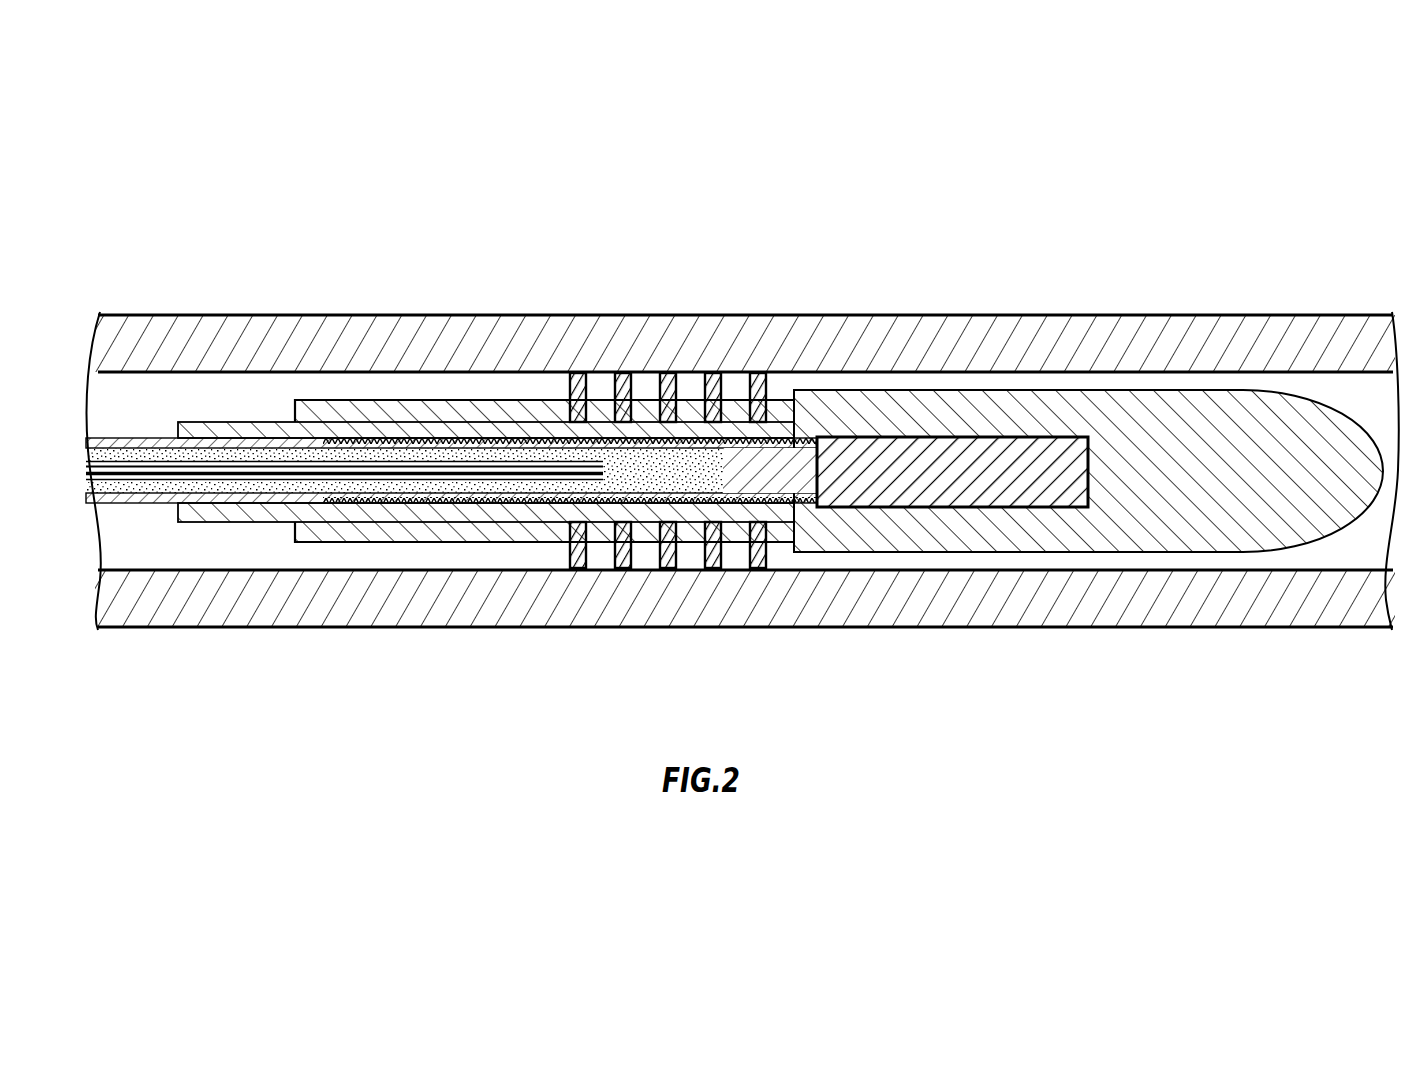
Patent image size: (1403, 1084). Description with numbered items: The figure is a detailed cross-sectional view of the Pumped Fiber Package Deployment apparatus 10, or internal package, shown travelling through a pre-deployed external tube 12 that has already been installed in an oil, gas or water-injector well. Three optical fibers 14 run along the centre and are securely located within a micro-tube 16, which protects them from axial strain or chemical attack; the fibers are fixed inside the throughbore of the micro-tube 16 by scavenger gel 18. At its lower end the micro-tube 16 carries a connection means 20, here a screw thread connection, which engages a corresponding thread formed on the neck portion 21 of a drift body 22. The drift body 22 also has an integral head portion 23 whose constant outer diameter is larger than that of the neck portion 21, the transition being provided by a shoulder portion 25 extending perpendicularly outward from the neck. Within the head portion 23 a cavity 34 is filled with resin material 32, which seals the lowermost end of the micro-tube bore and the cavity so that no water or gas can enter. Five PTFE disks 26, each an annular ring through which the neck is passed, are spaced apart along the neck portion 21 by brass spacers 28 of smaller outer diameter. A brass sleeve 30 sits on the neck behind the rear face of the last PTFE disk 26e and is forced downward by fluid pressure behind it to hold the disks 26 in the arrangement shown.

The Pumped Fiber Package Deployment apparatus 10 is at (780, 467).
The external tube 12 is at (1025, 628).
The optical fibers 14 is at (227, 489).
The micro-tube 16 is at (134, 434).
The scavenger gel 18 is at (688, 474).
The connection means 20 is at (472, 505).
The neck portion 21 is at (522, 510).
The drift body 22 is at (1165, 389).
The head portion 23 is at (1141, 411).
The shoulder portion 25 is at (797, 540).
The disk 26 is at (708, 372).
The last PTFE disk 26e is at (578, 376).
The spacer 28 is at (733, 397).
The brass sleeve 30 is at (325, 405).
The resin material 32 is at (873, 455).
The cavity 34 is at (943, 439).